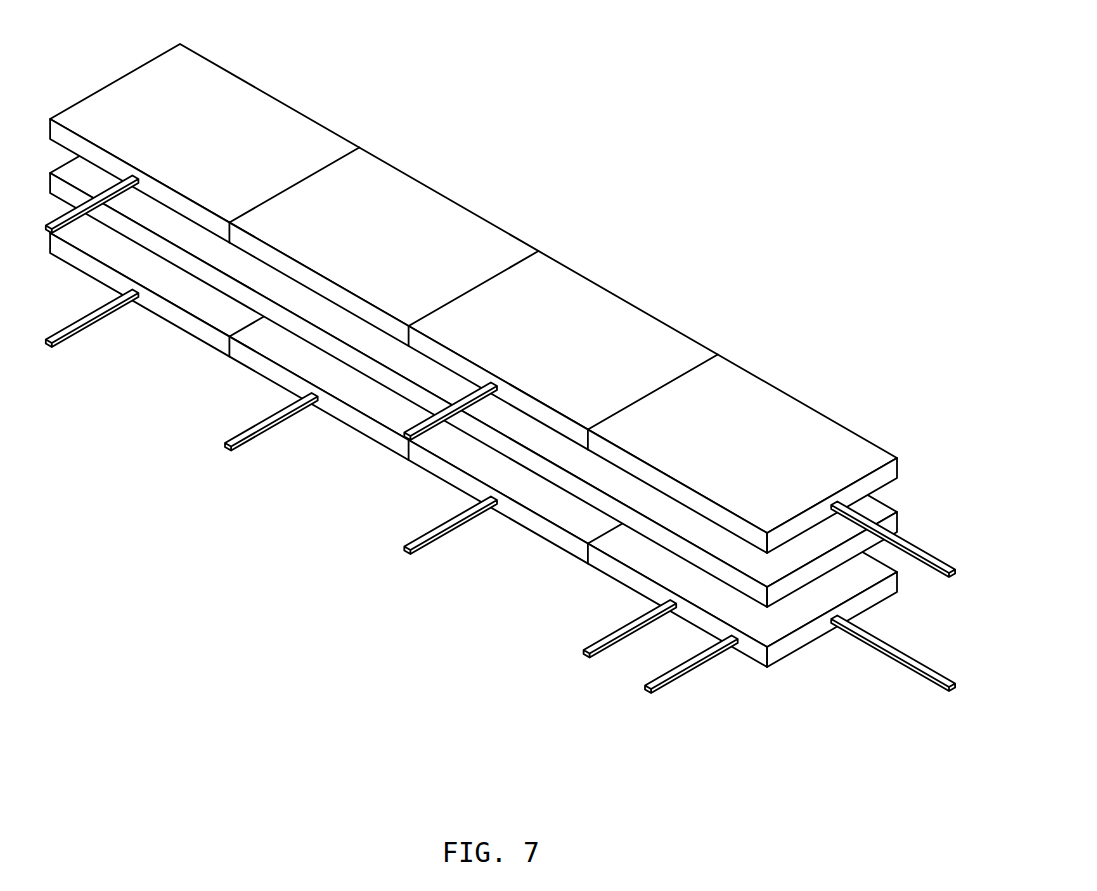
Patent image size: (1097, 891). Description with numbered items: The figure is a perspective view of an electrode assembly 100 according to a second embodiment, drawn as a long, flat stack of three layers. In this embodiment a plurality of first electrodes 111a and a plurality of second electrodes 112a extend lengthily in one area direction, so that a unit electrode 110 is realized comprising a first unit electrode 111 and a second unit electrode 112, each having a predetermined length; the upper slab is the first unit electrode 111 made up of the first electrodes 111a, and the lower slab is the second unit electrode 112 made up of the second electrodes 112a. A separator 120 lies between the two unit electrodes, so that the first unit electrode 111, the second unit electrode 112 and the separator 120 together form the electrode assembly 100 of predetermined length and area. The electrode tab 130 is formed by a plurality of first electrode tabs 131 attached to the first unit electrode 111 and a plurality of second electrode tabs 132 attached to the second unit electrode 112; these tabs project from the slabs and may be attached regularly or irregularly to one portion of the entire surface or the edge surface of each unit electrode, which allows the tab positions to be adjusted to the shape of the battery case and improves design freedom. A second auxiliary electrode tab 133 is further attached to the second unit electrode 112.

The electrode assembly 100 is at (500, 417).
The unit electrode 110 is at (473, 355).
The first unit electrode 111 is at (473, 315).
The first electrode 111a is at (777, 208).
The second unit electrode 112 is at (473, 412).
The second electrode 112a is at (160, 290).
The separator 120 is at (363, 363).
The electrode tab 130 is at (500, 483).
The first electrode tab 131 is at (405, 437).
The second electrode tab 132 is at (445, 537).
The second auxiliary electrode tab 133 is at (660, 690).